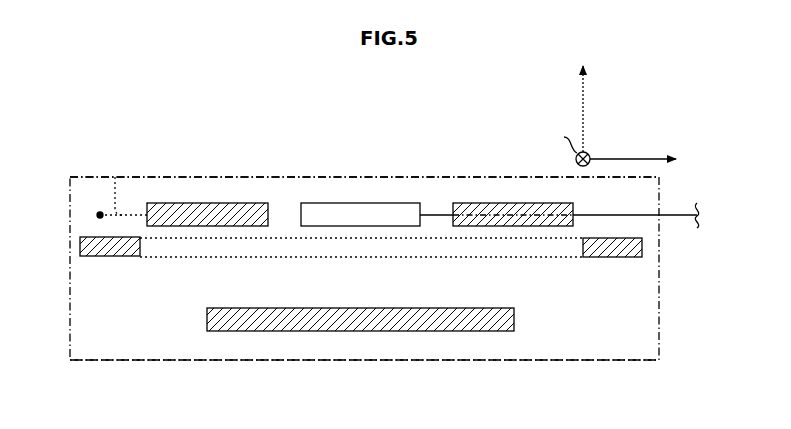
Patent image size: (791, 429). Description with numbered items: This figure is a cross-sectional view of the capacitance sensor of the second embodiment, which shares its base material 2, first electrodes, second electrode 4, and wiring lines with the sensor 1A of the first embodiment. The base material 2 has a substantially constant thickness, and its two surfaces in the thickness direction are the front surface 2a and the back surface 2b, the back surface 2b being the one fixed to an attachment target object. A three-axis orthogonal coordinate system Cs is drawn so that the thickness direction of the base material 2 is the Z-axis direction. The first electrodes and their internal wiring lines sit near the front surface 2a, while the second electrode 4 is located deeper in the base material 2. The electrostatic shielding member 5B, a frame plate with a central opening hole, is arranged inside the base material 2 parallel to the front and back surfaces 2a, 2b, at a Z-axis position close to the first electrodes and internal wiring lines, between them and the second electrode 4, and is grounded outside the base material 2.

The sensor 1A is at (119, 121).
The base material 2 is at (323, 174).
The front surface of the base material 2a is at (232, 177).
The back surface of the base material 2b is at (200, 360).
The second electrode 4 is at (371, 331).
The electrostatic shielding member 5B is at (116, 258).
The coordinate system Cs is at (613, 118).